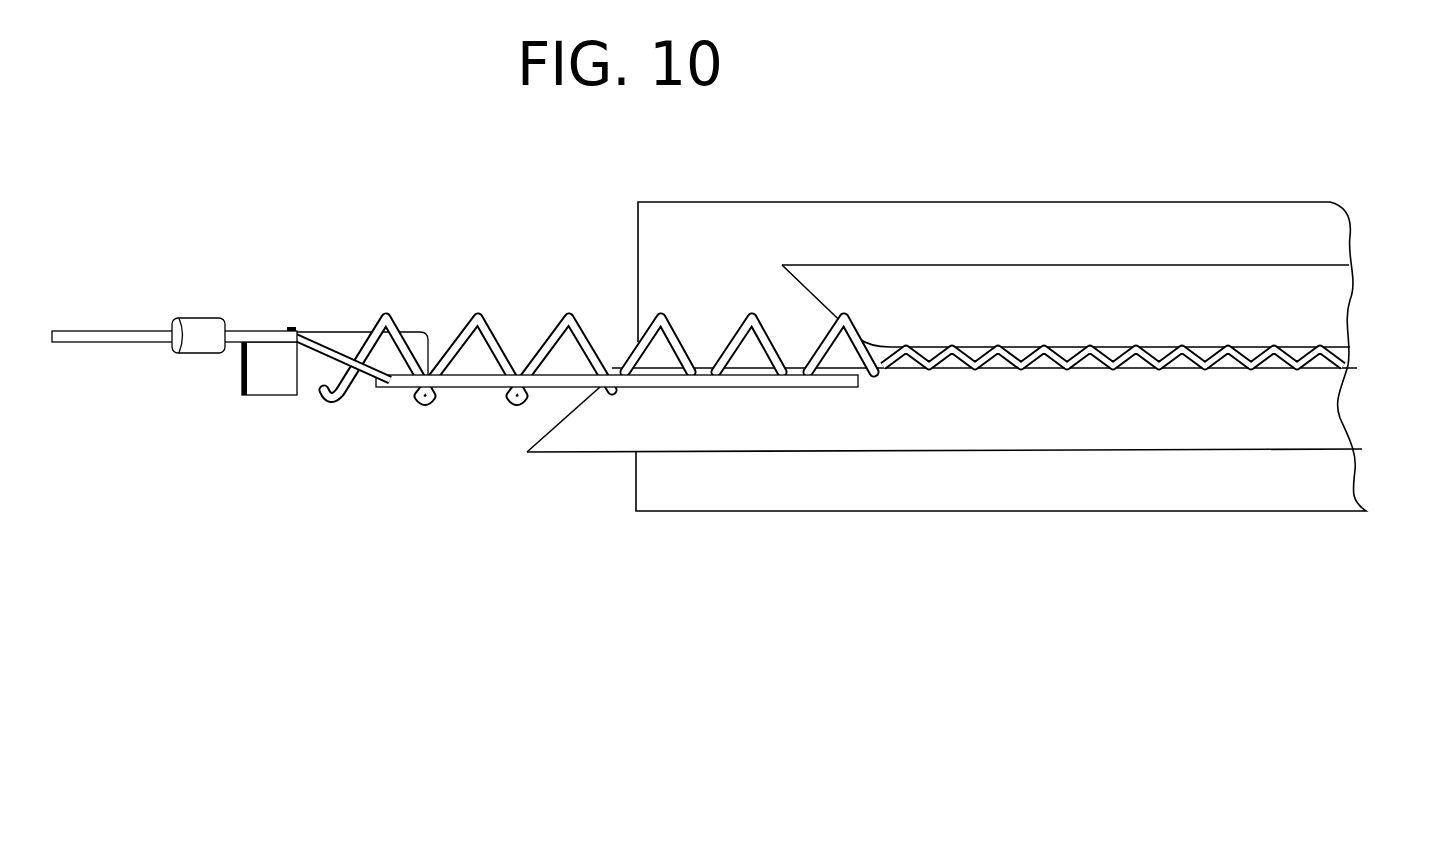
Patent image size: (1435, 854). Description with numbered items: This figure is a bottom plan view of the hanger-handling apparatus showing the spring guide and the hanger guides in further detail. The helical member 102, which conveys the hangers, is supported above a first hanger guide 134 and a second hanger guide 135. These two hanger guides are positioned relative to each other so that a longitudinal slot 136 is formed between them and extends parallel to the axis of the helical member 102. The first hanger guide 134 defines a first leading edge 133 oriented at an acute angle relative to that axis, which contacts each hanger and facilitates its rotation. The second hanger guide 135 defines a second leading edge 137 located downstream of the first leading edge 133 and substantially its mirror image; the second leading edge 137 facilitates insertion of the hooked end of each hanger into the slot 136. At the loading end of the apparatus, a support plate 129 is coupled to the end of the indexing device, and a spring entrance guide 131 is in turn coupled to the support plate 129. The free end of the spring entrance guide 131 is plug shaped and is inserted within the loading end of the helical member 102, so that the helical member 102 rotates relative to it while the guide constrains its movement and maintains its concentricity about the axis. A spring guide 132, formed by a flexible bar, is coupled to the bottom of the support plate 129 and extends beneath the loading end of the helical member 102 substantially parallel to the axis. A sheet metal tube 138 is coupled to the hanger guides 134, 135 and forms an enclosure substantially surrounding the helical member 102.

The helical member 102 is at (472, 316).
The support plate 129 is at (92, 318).
The spring entrance guide 131 is at (267, 396).
The spring guide 132 is at (232, 354).
The first leading edge 133 is at (548, 423).
The first hanger guide 134 is at (1153, 427).
The second hanger guide 135 is at (1084, 240).
The longitudinal slot 136 is at (1360, 356).
The second leading edge 137 is at (800, 291).
The sheet metal tube 138 is at (849, 203).